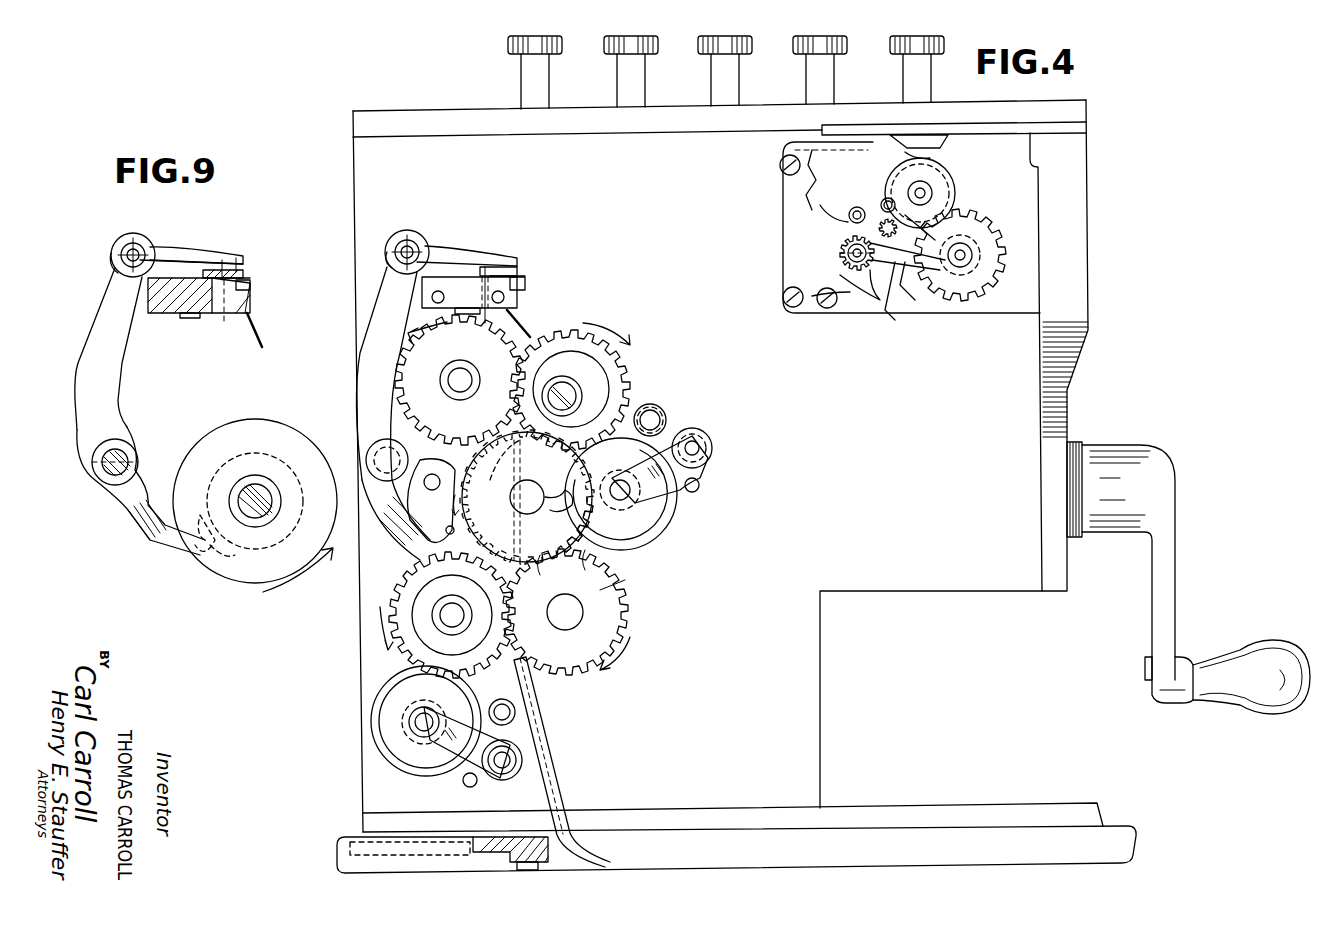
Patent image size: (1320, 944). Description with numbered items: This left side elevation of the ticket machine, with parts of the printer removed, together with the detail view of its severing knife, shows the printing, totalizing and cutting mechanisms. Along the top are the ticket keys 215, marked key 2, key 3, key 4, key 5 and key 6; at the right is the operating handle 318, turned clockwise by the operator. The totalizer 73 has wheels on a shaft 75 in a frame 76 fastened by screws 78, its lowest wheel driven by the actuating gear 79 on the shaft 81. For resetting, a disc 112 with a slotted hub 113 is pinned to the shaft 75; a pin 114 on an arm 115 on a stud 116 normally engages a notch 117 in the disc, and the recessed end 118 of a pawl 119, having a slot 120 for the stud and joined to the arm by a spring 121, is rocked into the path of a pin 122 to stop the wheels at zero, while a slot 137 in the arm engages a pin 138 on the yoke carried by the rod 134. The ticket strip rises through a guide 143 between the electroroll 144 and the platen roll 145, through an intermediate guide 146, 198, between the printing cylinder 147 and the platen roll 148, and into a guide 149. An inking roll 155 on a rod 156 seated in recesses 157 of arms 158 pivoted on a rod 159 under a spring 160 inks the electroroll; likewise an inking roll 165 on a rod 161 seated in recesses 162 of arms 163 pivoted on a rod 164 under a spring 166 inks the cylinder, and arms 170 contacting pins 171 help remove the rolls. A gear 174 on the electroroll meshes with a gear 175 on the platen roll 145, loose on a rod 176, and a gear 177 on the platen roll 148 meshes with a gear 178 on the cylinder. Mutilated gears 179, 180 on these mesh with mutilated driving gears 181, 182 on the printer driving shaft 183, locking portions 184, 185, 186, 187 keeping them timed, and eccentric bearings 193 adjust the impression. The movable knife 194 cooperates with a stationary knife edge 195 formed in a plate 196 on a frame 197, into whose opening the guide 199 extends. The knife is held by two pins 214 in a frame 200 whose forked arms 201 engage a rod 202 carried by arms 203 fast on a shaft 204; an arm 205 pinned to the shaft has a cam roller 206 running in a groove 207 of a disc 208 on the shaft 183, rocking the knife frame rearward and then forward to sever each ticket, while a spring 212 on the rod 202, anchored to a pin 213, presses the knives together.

In FIG. 4, the knob 2 is at (917, 58).
In FIG. 4, the knob 3 is at (820, 59).
In FIG. 4, the knob 4 is at (725, 60).
In FIG. 4, the knob 5 is at (631, 60).
In FIG. 4, the knob 6 is at (535, 61).
In FIG. 4, the top plate 215 is at (722, 96).
In FIG. 4, the crank handle 318 is at (1160, 572).
In FIG. 4, the wheel 73 is at (950, 178).
In FIG. 4, the hub 75 is at (925, 193).
In FIG. 4, the lever 76 is at (835, 300).
In FIG. 4, the housing screw 78 is at (783, 160).
In FIG. 4, the gear 79 is at (985, 222).
In FIG. 4, the gear hub 81 is at (970, 250).
In FIG. 4, the cam 112 is at (935, 135).
In FIG. 4, the pinion 113 is at (868, 240).
In FIG. 4, the spring 114 is at (818, 172).
In FIG. 4, the spring arm 115 is at (830, 200).
In FIG. 4, the knurled wheel 116 is at (840, 253).
In FIG. 4, the pin 117 is at (885, 198).
In FIG. 4, the link 118 is at (925, 263).
In FIG. 4, the pawl 119 is at (912, 288).
In FIG. 4, the screw 120 is at (835, 280).
In FIG. 4, the pawl arm 121 is at (890, 310).
In FIG. 4, the pin 122 is at (930, 215).
In FIG. 4, the lever 134 is at (850, 300).
In FIG. 4, the pin 137 is at (850, 208).
In FIG. 4, the pinion 138 is at (880, 228).
In FIG. 4, the base block 143 is at (590, 862).
In FIG. 4, the gear 144 is at (425, 598).
In FIG. 4, the rotation arrow 145 is at (590, 672).
In FIG. 4, the gear 146 is at (525, 514).
In FIG. 4, the gear 147 is at (605, 370).
In FIG. 9, the gear 148 is at (248, 335).
In FIG. 4, the gear 148 is at (432, 380).
In FIG. 4, the pin 149 is at (520, 318).
In FIG. 4, the disc 155 is at (372, 710).
In FIG. 4, the hub 156 is at (415, 722).
In FIG. 4, the hub 157 is at (428, 708).
In FIG. 4, the cam 158 is at (405, 738).
In FIG. 4, the roller 159 is at (500, 780).
In FIG. 4, the roller 160 is at (515, 730).
In FIG. 4, the hub 161 is at (618, 503).
In FIG. 4, the pin 162 is at (618, 480).
In FIG. 4, the ring 163 is at (670, 520).
In FIG. 4, the roller 164 is at (700, 443).
In FIG. 4, the ring 165 is at (675, 532).
In FIG. 4, the roller 166 is at (668, 418).
In FIG. 4, the lever 170 is at (680, 496).
In FIG. 4, the pin 171 is at (700, 483).
In FIG. 4, the rotation arrow 174 is at (410, 580).
In FIG. 4, the lever bar 175 is at (537, 672).
In FIG. 4, the gear 176 is at (590, 612).
In FIG. 4, the plate 177 is at (400, 368).
In FIG. 4, the rotation arrow 178 is at (575, 342).
In FIG. 4, the tooth 179 is at (612, 590).
In FIG. 4, the hub screw 180 is at (600, 395).
In FIG. 4, the pawl 181 is at (540, 500).
In FIG. 4, the ring 182 is at (600, 540).
In FIG. 9, the disc 183 is at (262, 478).
In FIG. 4, the disc 183 is at (545, 522).
In FIG. 4, the pawl 184 is at (495, 432).
In FIG. 4, the slot 185 is at (560, 450).
In FIG. 4, the tooth 186 is at (583, 562).
In FIG. 4, the tooth 187 is at (540, 570).
In FIG. 4, the rotation arrow 193 is at (445, 378).
In FIG. 9, the plate 194 is at (252, 268).
In FIG. 4, the plate 194 is at (522, 272).
In FIG. 9, the block 195 is at (252, 284).
In FIG. 4, the block 195 is at (527, 280).
In FIG. 9, the arm edge 196 is at (125, 274).
In FIG. 4, the arm edge 196 is at (395, 272).
In FIG. 9, the block 197 is at (170, 316).
In FIG. 4, the block 197 is at (426, 296).
In FIG. 4, the hub 198 is at (550, 603).
In FIG. 9, the wedge 199 is at (226, 320).
In FIG. 9, the pad 200 is at (243, 262).
In FIG. 4, the pad 200 is at (515, 262).
In FIG. 9, the bar 201 is at (165, 248).
In FIG. 4, the bar 201 is at (440, 252).
In FIG. 9, the roller 202 is at (136, 248).
In FIG. 4, the roller 202 is at (410, 248).
In FIG. 9, the arm 203 is at (114, 300).
In FIG. 4, the arm 203 is at (378, 295).
In FIG. 9, the pivot 204 is at (105, 480).
In FIG. 9, the arm 205 is at (110, 515).
In FIG. 9, the lug 206 is at (215, 560).
In FIG. 9, the rotation arrow 207 is at (255, 555).
In FIG. 9, the disc 208 is at (215, 445).
In FIG. 9, the bar 212 is at (185, 255).
In FIG. 4, the bar 212 is at (455, 256).
In FIG. 9, the spring 213 is at (112, 256).
In FIG. 4, the spring 213 is at (395, 258).
In FIG. 9, the rod 214 is at (228, 262).
In FIG. 4, the rod 214 is at (495, 262).